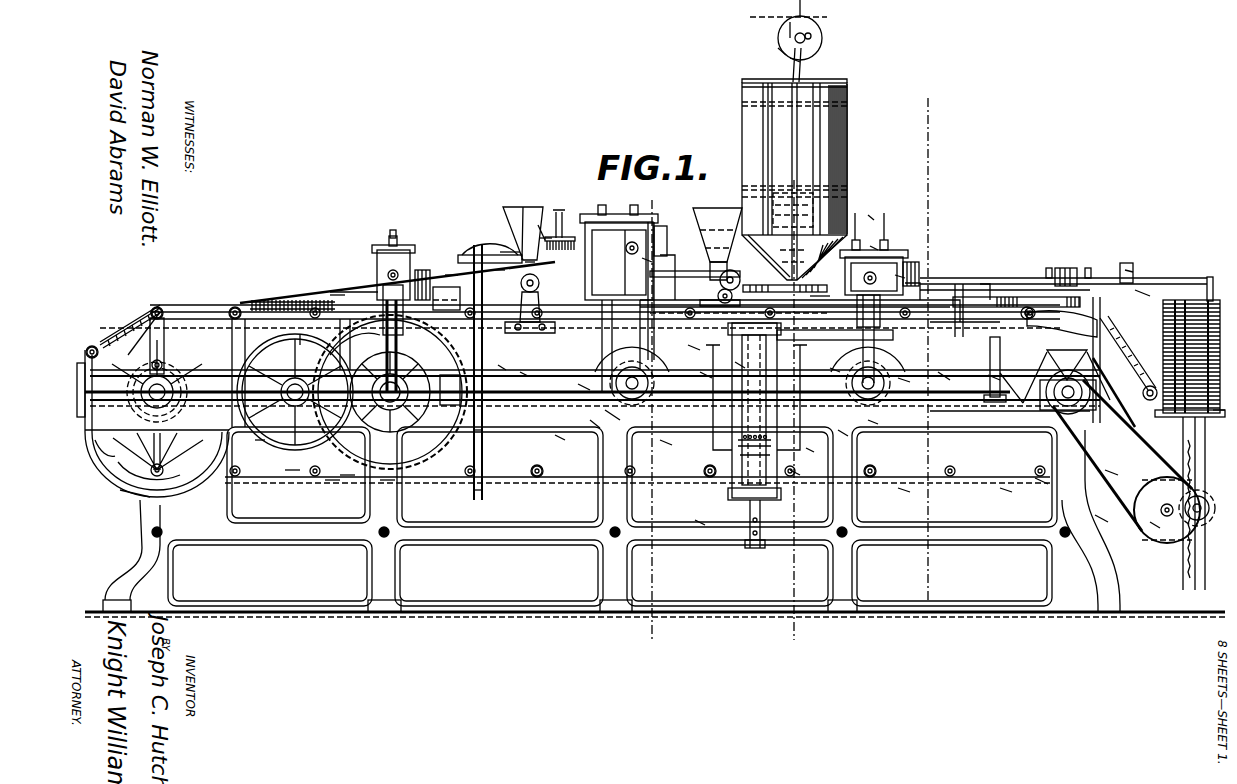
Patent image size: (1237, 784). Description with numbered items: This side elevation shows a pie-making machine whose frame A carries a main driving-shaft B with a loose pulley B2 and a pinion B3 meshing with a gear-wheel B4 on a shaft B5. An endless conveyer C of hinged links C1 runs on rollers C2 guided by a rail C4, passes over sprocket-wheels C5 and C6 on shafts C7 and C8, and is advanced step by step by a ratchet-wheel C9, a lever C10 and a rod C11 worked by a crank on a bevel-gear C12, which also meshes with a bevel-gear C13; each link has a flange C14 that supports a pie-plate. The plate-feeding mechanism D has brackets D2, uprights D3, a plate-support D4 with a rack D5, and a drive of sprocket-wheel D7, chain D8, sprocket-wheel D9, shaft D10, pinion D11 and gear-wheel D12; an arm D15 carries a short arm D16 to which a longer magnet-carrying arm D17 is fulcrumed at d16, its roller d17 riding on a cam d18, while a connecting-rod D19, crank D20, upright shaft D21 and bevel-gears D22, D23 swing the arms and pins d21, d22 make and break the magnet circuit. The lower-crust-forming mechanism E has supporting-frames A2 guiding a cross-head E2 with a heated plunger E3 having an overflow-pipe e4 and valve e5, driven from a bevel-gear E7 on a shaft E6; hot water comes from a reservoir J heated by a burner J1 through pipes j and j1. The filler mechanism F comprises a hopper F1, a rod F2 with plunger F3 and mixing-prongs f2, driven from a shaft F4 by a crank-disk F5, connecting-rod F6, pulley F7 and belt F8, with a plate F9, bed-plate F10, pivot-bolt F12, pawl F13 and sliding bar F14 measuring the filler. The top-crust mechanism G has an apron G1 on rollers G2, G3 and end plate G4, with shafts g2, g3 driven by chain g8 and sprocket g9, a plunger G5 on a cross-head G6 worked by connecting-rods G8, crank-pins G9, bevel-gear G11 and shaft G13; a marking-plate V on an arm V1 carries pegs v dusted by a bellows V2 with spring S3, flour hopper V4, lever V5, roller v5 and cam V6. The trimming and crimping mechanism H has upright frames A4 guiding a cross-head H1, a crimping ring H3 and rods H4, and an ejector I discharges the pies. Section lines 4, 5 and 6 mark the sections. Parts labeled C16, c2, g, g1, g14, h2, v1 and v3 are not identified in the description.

The main frame A is at (350, 500).
The frame bracket A2 is at (840, 430).
The frame arm A4 is at (355, 344).
The driving wheel B is at (386, 403).
The wheel shaft B2 is at (300, 335).
The wheel arm B3 is at (292, 470).
The main gear B4 is at (446, 500).
The gear arm B5 is at (346, 480).
The carrier frame end C is at (270, 300).
The carrier bolt C1 is at (160, 305).
The carrier bolt C2 is at (222, 300).
The carrier bar C4 is at (702, 520).
The carrier link C5 is at (125, 488).
The carrier bracket C6 is at (1040, 378).
The carrier guide C7 is at (130, 463).
The carrier arm C8 is at (1112, 316).
The carrier lever C9 is at (110, 412).
The carrier stop C10 is at (77, 390).
The inclined carrier rail C11 is at (162, 310).
The carrier rod C12 is at (333, 480).
The carrier rod C13 is at (387, 480).
The carrier rack C14 is at (270, 304).
The carrier pinion C16 is at (578, 372).
The pivot pin c2 is at (90, 350).
The delivery mechanism D is at (1102, 280).
The delivery link D2 is at (1100, 520).
The delivery rod D3 is at (1215, 410).
The delivery column D4 is at (1197, 503).
The delivery pulley D5 is at (1172, 555).
The delivery bar D7 is at (1006, 490).
The delivery lever D8 is at (1040, 480).
The delivery lever D9 is at (1160, 520).
The delivery link D10 is at (1110, 470).
The delivery pinion D11 is at (1196, 520).
The delivery rack D12 is at (1192, 560).
The delivery arm D15 is at (1140, 295).
The delivery slide D16 is at (1068, 270).
The delivery post D17 is at (1140, 285).
The delivery support D19 is at (987, 280).
The delivery support D20 is at (955, 300).
The delivery bracket D21 is at (942, 372).
The delivery bracket D22 is at (992, 375).
The delivery bar D23 is at (902, 490).
The slide pin d16 is at (1090, 270).
The slide pin d17 is at (1127, 270).
The spring cylinder d18 is at (1136, 302).
The slide pin d21 is at (1049, 270).
The slide block d22 is at (1128, 265).
The ejector post E is at (872, 250).
The ejector block E2 is at (900, 275).
The ejector cap E3 is at (876, 246).
The ejector bracket E6 is at (906, 372).
The ejector arm E7 is at (872, 420).
The ejector rod e4 is at (855, 213).
The ejector rod e5 is at (872, 250).
The hopper F is at (781, 179).
The hopper wall F1 is at (850, 92).
The hopper rod F2 is at (812, 78).
The hopper spout F3 is at (718, 260).
The hopper bracket F4 is at (792, 40).
The hopper bracket F5 is at (778, 52).
The hopper wheel F6 is at (822, 40).
The hopper pin F7 is at (790, 62).
The hopper support F8 is at (790, 30).
The hopper link F9 is at (812, 452).
The hopper slide F10 is at (740, 300).
The hopper bracket F12 is at (755, 360).
The hopper bracket F13 is at (848, 370).
The hopper bracket F14 is at (825, 300).
The feed funnel f2 is at (760, 202).
The feeder post G is at (612, 325).
The feeder link G1 is at (545, 300).
The feeder block G2 is at (665, 230).
The feeder funnel G3 is at (530, 210).
The feeder arm G4 is at (450, 275).
The feeder rod G5 is at (675, 255).
The feeder brush G6 is at (622, 240).
The feeder pinion G8 is at (580, 385).
The feeder bar G9 is at (610, 415).
The feeder bracket G11 is at (590, 425).
The feeder bracket G13 is at (668, 440).
The feeder pin g is at (646, 260).
The feeder roller g1 is at (540, 280).
The feeder roller g2 is at (790, 282).
The feeder pin g3 is at (523, 372).
The feeder lever g8 is at (335, 300).
The feeder lever g9 is at (255, 440).
The feeder rod g14 is at (545, 240).
The plunger post H is at (386, 303).
The plunger knob H1 is at (395, 232).
The plunger block H3 is at (450, 375).
The plunger bar H4 is at (378, 294).
The plunger guide h2 is at (424, 280).
The inclined bar I is at (128, 355).
The pipe J is at (740, 498).
The pipe rod J1 is at (760, 502).
The pin j is at (870, 215).
The pin j1 is at (792, 472).
The spring S3 is at (500, 270).
The valve post V is at (600, 200).
The valve rod V1 is at (540, 230).
The valve arm V2 is at (455, 287).
The valve rod V4 is at (530, 260).
The valve lever V5 is at (478, 440).
The valve lever V6 is at (560, 440).
The valve plate v is at (540, 250).
The valve pin v1 is at (690, 345).
The valve pin v3 is at (500, 365).
The valve pin v5 is at (486, 482).
The section line 4 is at (897, 648).
The section line 5 is at (794, 180).
The section line 6 is at (652, 200).